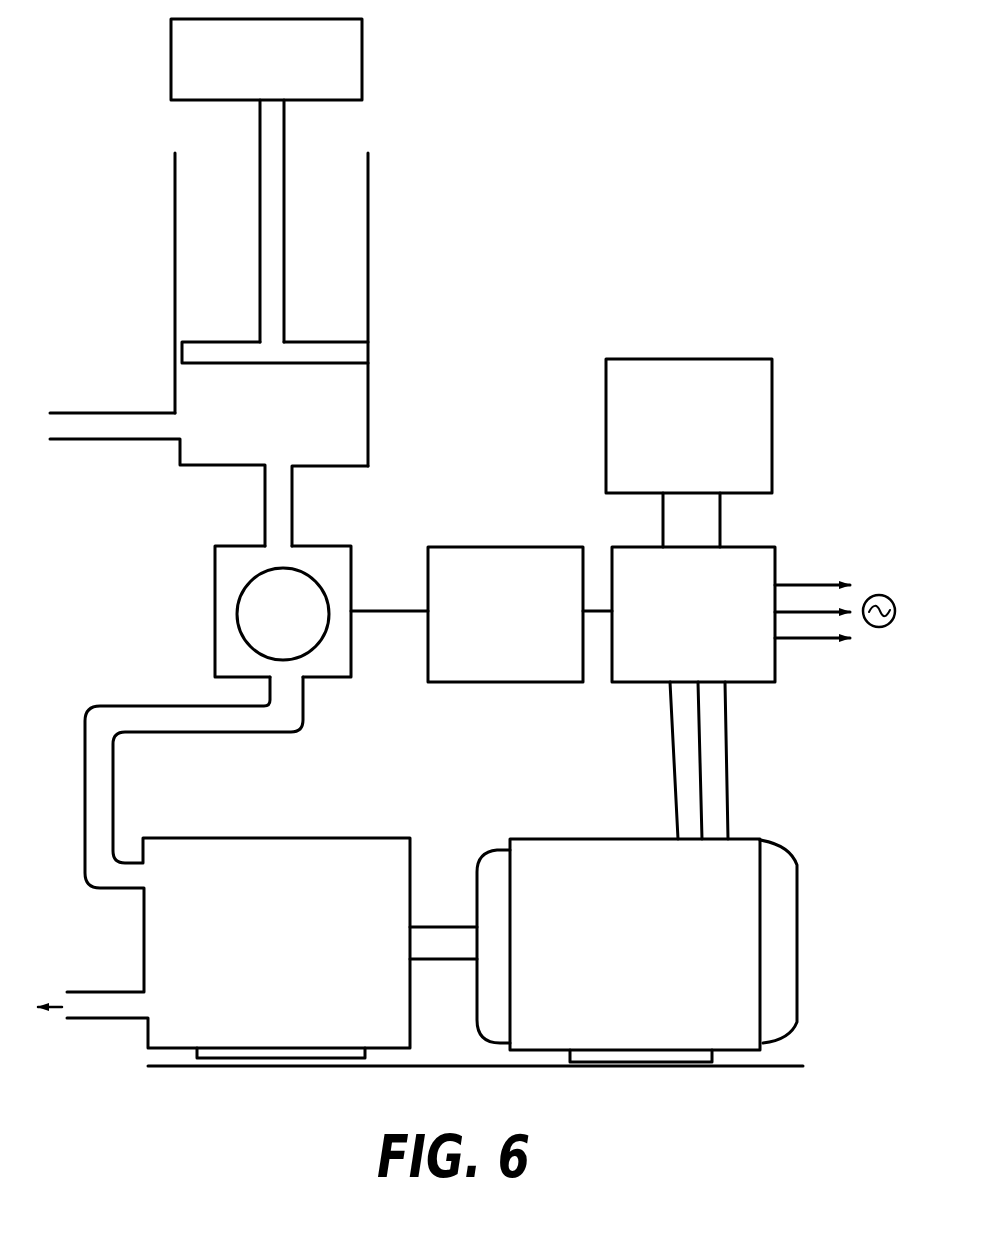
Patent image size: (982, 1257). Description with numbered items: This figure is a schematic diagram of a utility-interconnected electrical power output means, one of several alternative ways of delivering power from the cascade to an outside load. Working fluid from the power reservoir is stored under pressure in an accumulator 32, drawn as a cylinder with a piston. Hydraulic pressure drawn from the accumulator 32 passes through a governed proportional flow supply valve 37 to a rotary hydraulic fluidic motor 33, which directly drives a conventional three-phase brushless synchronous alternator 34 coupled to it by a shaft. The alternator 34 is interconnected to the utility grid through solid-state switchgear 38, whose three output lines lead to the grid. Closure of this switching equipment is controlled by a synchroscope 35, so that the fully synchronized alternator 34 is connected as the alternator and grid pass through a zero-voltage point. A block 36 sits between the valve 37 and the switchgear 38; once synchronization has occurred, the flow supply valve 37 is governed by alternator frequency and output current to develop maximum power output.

The accumulator 32 is at (352, 291).
The fluidic motor 33 is at (391, 957).
The alternator 34 is at (736, 962).
The synchroscope 35 is at (722, 367).
The sensor unit 36 is at (548, 673).
The flow supply valve 37 is at (250, 608).
The solid-state switchgear 38 is at (762, 673).